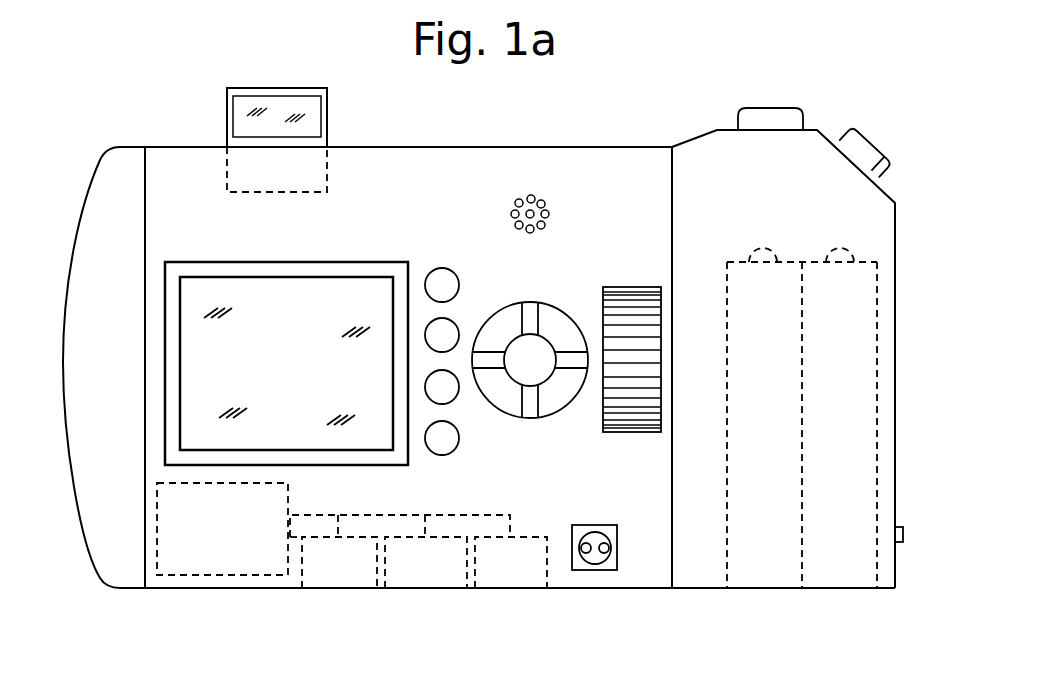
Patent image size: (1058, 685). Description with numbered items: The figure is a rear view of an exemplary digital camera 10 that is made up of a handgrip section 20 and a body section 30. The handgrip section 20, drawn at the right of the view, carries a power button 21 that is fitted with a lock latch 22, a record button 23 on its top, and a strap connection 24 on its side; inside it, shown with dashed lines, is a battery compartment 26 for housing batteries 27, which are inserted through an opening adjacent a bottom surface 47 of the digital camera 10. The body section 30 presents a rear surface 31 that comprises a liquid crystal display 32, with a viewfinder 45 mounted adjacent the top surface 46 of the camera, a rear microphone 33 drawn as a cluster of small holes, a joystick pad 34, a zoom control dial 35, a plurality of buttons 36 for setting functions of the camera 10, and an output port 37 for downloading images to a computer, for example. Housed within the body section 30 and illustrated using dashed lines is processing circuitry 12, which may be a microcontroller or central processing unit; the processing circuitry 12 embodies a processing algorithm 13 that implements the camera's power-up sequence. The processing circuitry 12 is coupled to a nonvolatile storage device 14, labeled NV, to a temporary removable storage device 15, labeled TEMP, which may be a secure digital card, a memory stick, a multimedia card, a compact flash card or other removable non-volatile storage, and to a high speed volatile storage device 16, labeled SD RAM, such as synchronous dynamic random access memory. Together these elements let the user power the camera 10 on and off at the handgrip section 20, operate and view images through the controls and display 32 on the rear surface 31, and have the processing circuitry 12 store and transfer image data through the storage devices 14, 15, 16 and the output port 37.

The digital camera 10 is at (128, 120).
The processing circuitry 12 is at (290, 502).
The processing algorithm 13 is at (222, 529).
The nonvolatile (NV) storage device 14 is at (340, 588).
The temporary (TEMP) removable storage device 15 is at (441, 588).
The high speed storage device 16 is at (540, 588).
The handgrip section 20 is at (703, 590).
The power button 21 is at (861, 141).
The lock latch 22 is at (888, 178).
The record button 23 is at (738, 119).
The strap connection 24 is at (906, 532).
The battery compartment 26 is at (877, 570).
The batteries 27 is at (778, 258).
The body section 30 is at (620, 589).
The rear surface 31 is at (620, 158).
The liquid crystal display (LCD) 32 is at (395, 466).
The rear microphone 33 is at (514, 204).
The joystick pad 34 is at (547, 420).
The zoom control dial 35 is at (623, 432).
The buttons 36 is at (457, 398).
The output port 37 is at (605, 525).
The viewfinder 45 is at (328, 108).
The top surface 46 is at (180, 145).
The bottom surface 47 is at (176, 590).